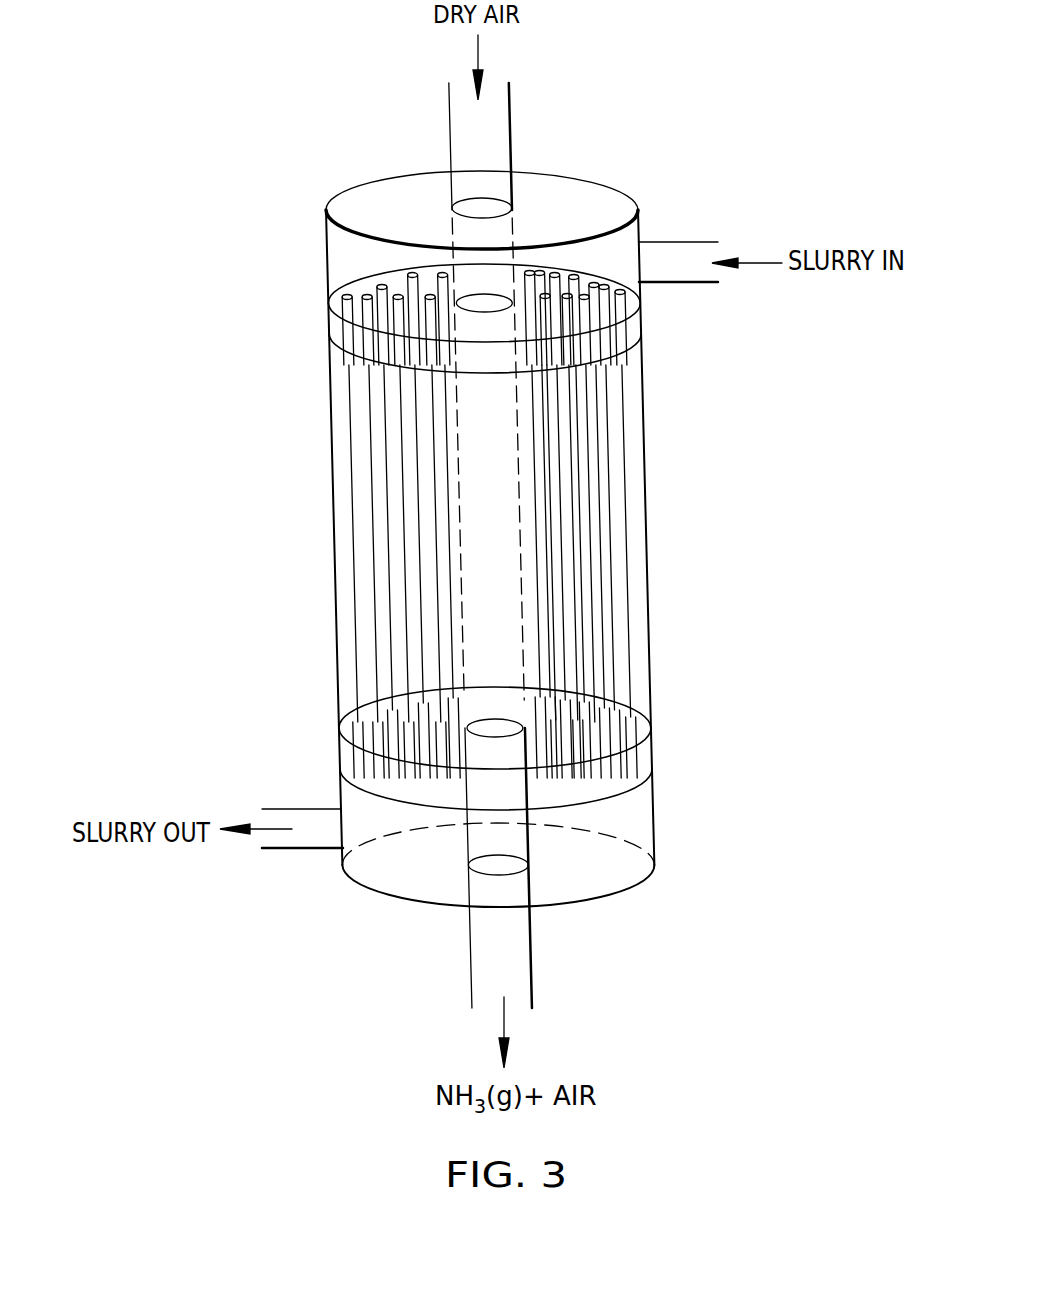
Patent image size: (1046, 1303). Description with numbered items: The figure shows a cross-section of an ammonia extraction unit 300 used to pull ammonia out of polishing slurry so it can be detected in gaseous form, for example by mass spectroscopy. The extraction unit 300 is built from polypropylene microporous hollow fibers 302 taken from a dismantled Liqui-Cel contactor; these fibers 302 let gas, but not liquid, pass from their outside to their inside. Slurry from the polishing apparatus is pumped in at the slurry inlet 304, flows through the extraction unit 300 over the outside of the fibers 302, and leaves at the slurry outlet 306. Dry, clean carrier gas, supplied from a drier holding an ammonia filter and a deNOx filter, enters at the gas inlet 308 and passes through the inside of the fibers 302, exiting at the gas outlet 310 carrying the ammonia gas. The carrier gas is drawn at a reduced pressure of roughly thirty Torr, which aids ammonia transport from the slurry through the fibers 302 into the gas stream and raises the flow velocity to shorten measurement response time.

The ammonia extraction unit 300 is at (252, 468).
The microporous hollow fibers 302 is at (633, 563).
The slurry inlet 304 is at (683, 240).
The slurry outlet 306 is at (305, 808).
The dry gas inlet 308 is at (448, 112).
The gas outlet 310 is at (472, 960).